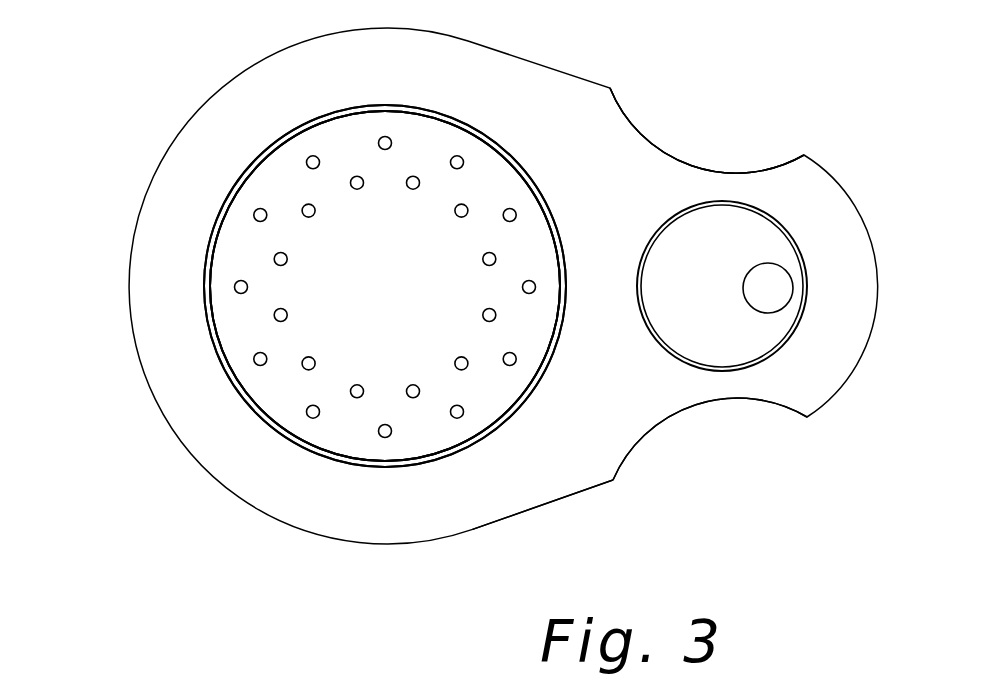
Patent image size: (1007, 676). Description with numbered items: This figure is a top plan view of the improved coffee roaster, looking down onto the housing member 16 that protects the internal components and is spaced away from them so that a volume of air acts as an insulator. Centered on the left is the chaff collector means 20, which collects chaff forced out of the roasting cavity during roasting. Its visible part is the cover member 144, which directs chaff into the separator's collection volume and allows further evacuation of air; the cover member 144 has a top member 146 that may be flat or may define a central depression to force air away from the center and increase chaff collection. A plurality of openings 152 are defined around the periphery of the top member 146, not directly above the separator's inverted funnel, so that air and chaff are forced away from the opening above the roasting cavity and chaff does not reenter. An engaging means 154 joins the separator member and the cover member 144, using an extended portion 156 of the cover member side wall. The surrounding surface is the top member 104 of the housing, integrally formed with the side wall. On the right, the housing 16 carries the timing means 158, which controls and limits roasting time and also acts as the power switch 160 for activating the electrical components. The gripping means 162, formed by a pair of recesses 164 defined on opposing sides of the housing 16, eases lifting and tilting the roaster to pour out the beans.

The housing member 16 is at (555, 70).
The chaff collector means 20 is at (432, 92).
The top member 104 is at (508, 470).
The cover member 144 is at (236, 326).
The top member 146 is at (263, 412).
The openings 152 is at (273, 258).
The engaging means 154 is at (225, 208).
The extended portion 156 is at (245, 168).
The timing means 158 is at (712, 273).
The power switch 160 is at (712, 307).
The gripping means 162 is at (647, 138).
The recesses 164 is at (690, 160).